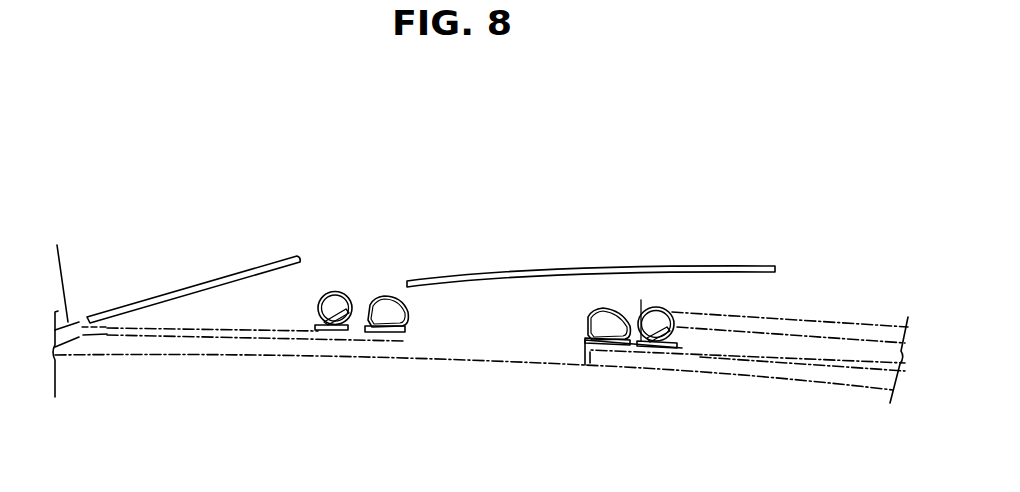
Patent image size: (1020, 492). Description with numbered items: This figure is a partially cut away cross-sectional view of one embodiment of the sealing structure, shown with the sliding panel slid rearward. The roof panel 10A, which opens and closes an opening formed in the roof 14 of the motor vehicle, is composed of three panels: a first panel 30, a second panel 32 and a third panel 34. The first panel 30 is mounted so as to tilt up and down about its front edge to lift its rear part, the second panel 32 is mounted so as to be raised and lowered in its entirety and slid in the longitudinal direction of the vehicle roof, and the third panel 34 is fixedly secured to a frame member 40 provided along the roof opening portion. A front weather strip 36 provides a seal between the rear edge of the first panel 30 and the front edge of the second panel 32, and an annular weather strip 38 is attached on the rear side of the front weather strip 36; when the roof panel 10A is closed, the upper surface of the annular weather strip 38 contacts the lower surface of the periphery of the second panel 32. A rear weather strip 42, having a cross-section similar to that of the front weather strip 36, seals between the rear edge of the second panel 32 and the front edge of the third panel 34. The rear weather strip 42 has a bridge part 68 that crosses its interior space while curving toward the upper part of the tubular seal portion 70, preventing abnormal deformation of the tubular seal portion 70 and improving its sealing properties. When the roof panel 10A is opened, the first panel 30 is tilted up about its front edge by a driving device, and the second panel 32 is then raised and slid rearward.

The roof panel 10A is at (618, 202).
The roof 14 is at (57, 262).
The first panel 30 is at (248, 270).
The second panel 32 is at (495, 275).
The third panel 34 is at (830, 323).
The front weather strip 36 is at (317, 330).
The annular weather strip 38 is at (383, 294).
The frame member 40 is at (183, 335).
The rear weather strip 42 is at (668, 302).
The bridge part 68 is at (643, 343).
The tubular seal portion 70 is at (641, 300).